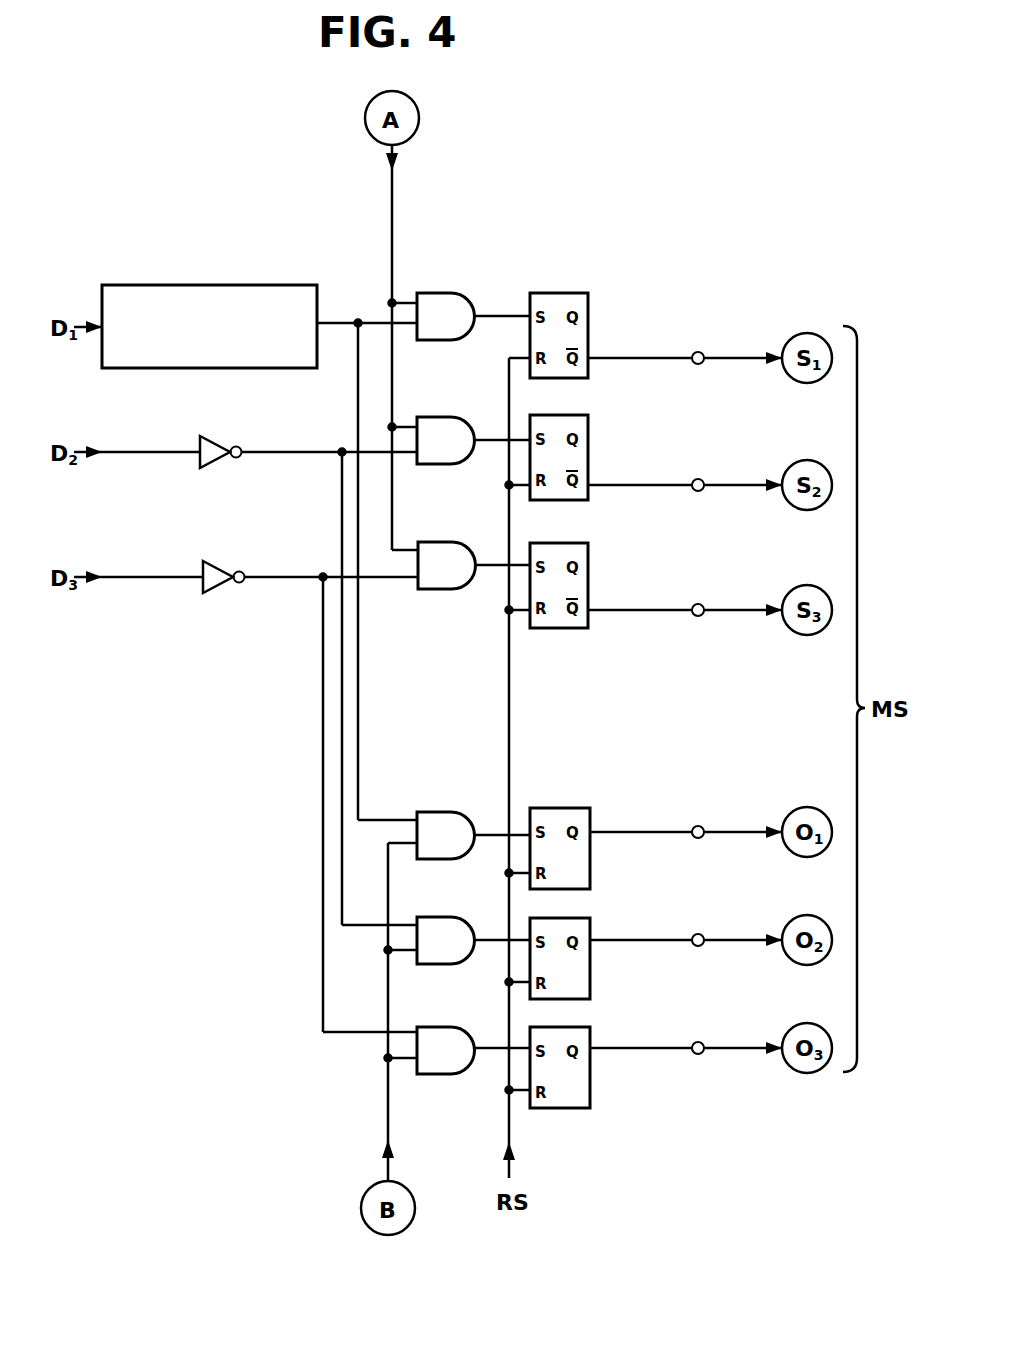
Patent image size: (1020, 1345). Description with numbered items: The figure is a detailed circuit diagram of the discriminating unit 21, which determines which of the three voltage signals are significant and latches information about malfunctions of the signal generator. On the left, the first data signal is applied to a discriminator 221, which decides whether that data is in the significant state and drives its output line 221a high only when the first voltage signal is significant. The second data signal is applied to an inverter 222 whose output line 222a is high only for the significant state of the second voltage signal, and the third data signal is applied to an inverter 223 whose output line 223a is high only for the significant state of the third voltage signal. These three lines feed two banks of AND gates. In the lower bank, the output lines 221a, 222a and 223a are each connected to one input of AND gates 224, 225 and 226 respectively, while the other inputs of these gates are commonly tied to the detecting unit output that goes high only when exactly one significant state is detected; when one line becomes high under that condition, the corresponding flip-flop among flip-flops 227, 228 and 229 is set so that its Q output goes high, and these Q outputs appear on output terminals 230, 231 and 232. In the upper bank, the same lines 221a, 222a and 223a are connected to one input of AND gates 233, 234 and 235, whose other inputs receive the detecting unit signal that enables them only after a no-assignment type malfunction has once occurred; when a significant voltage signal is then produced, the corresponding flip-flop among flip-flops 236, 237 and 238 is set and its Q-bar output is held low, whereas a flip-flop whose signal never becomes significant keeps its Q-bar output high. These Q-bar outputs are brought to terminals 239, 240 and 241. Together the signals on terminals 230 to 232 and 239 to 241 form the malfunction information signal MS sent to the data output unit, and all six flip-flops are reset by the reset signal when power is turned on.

The discriminating unit 21 is at (543, 201).
The discriminator 221 is at (222, 296).
The output line 221a is at (340, 320).
The inverter 222 is at (206, 437).
The output line 222a is at (300, 450).
The inverter 223 is at (212, 562).
The output line 223a is at (289, 574).
The AND gate 224 is at (440, 812).
The AND gate 225 is at (437, 917).
The AND gate 226 is at (440, 1027).
The flip-flop 227 is at (570, 808).
The flip-flop 228 is at (575, 918).
The flip-flop 229 is at (575, 1027).
The output terminal 230 is at (698, 826).
The output terminal 231 is at (698, 934).
The output terminal 232 is at (698, 1042).
The AND gate 233 is at (447, 284).
The AND gate 234 is at (445, 409).
The AND gate 235 is at (438, 542).
The flip-flop 236 is at (566, 284).
The flip-flop 237 is at (575, 415).
The flip-flop 238 is at (572, 543).
The output terminal 239 is at (698, 352).
The output terminal 240 is at (698, 479).
The output terminal 241 is at (698, 604).